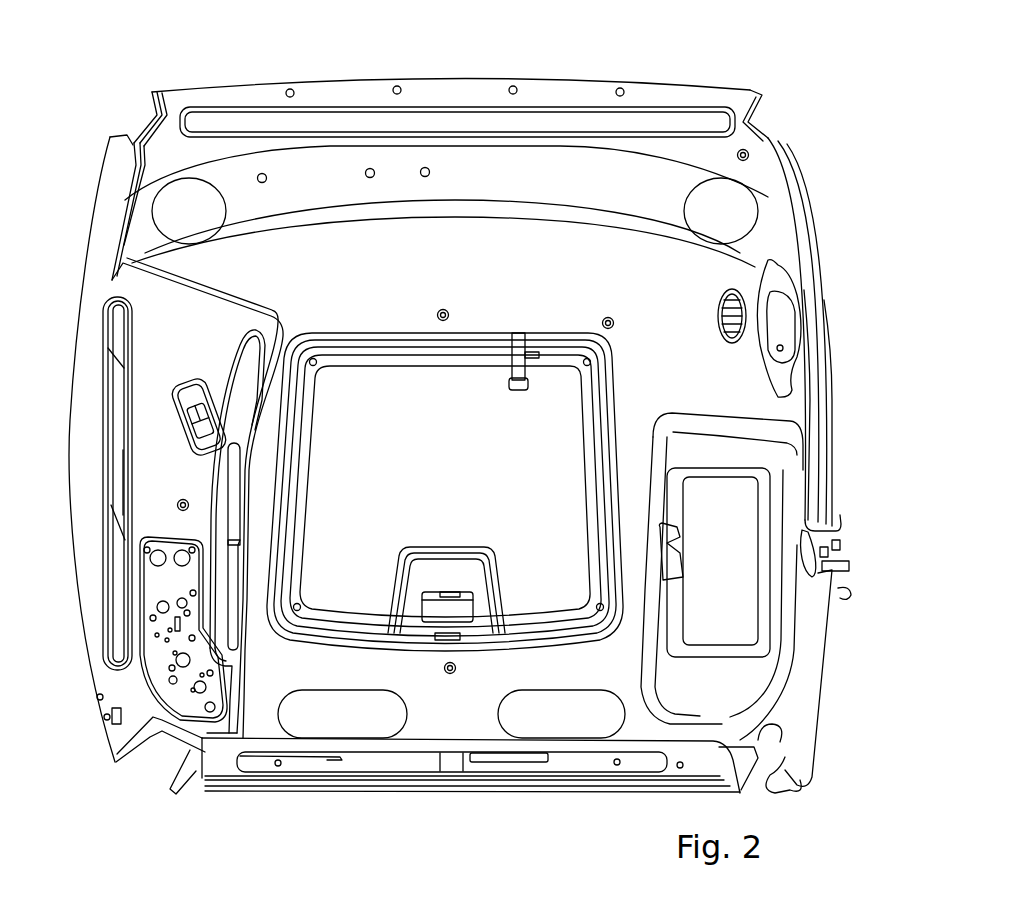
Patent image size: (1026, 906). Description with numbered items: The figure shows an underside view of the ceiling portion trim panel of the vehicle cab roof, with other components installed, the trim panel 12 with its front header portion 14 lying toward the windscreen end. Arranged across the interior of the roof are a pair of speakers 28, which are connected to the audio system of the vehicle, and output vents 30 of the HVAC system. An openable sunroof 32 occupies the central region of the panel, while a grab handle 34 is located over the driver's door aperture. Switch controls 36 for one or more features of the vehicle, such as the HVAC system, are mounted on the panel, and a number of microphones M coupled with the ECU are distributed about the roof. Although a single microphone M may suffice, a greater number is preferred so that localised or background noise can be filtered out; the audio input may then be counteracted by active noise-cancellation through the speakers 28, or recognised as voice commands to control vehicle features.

The headliner 12 is at (253, 0).
The front header 14 is at (446, 133).
The speakers 28 is at (183, 207).
The output vents 30 is at (320, 722).
The openable sunroof 32 is at (527, 473).
The grab handle 34 is at (760, 312).
The switch controls 36 is at (160, 592).
The microphones M is at (425, 172).